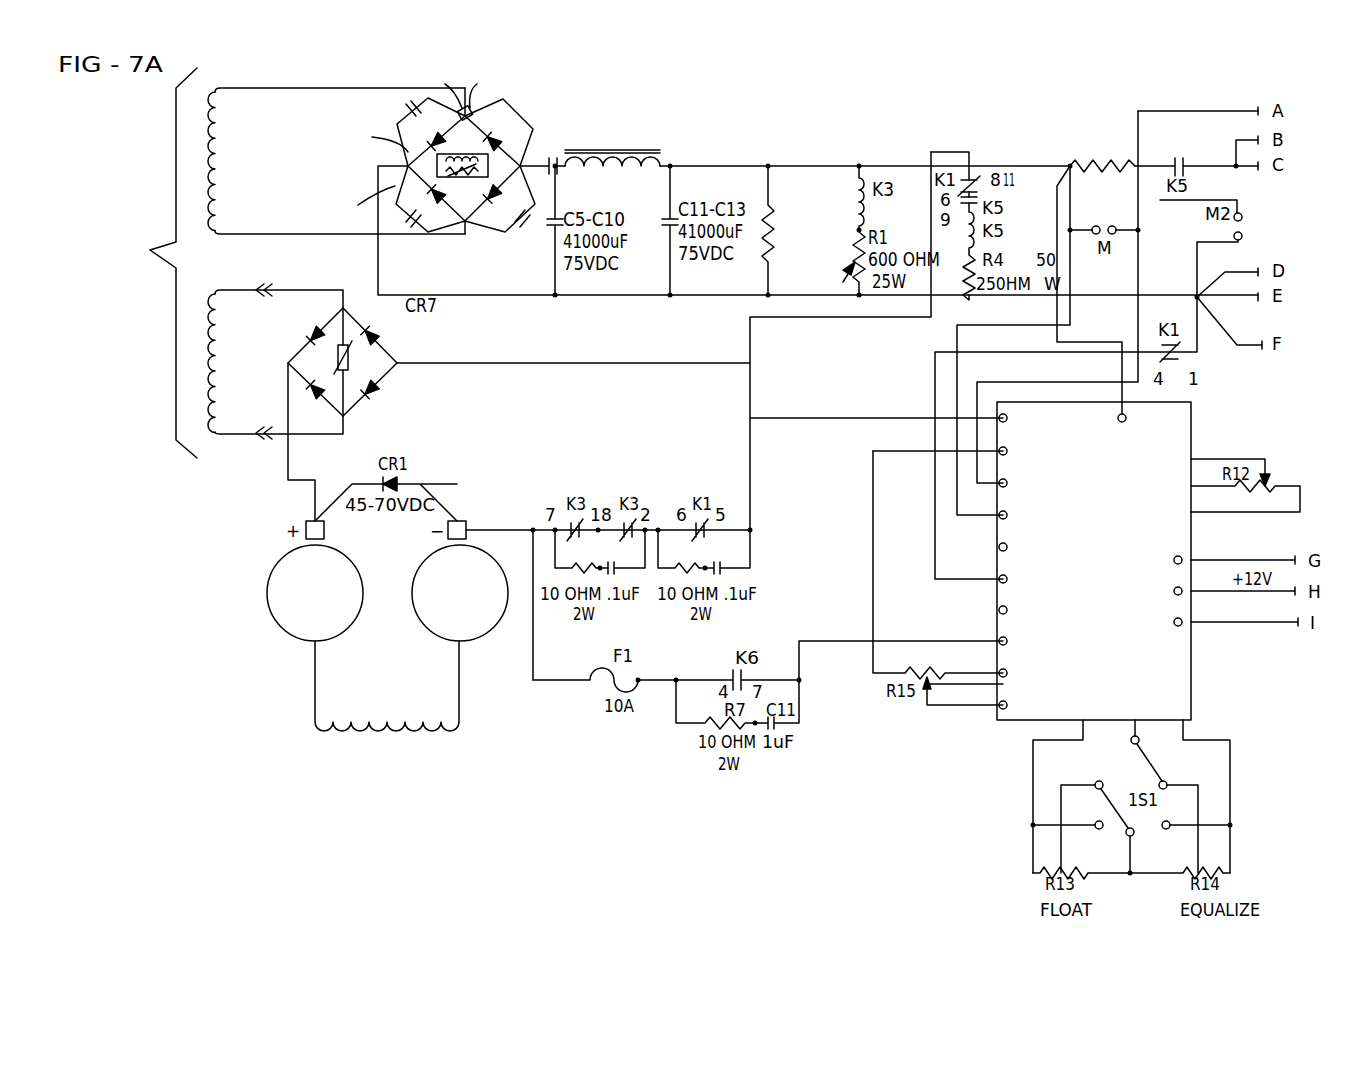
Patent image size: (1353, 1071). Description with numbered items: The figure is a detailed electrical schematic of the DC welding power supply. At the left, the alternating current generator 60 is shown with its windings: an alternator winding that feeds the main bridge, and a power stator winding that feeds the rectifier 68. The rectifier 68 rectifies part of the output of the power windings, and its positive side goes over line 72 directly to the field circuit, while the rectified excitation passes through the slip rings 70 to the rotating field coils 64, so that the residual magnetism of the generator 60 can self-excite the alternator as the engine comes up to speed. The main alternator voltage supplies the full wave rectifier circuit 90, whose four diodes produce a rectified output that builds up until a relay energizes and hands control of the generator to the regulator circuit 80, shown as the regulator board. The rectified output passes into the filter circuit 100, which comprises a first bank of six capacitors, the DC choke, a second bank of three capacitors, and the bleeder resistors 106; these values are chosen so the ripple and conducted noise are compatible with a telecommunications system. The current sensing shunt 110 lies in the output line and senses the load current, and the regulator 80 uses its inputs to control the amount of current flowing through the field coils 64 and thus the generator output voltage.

The alternating current generator 60 is at (150, 250).
The full wave rectifier circuit 90 is at (546, 121).
The filter circuit 100 is at (675, 127).
The bleeder resistors 106 is at (768, 200).
The current sensing shunt 110 is at (1085, 137).
The rectifier 68 is at (398, 366).
The line 72 is at (288, 468).
The slip rings 70 is at (282, 667).
The rotating field coils 64 is at (387, 686).
The regulator circuit 80 is at (1170, 438).